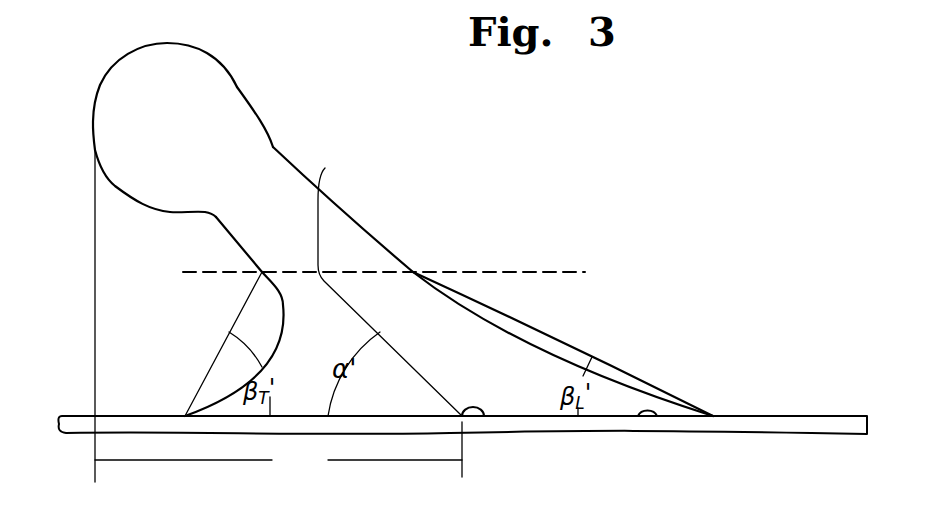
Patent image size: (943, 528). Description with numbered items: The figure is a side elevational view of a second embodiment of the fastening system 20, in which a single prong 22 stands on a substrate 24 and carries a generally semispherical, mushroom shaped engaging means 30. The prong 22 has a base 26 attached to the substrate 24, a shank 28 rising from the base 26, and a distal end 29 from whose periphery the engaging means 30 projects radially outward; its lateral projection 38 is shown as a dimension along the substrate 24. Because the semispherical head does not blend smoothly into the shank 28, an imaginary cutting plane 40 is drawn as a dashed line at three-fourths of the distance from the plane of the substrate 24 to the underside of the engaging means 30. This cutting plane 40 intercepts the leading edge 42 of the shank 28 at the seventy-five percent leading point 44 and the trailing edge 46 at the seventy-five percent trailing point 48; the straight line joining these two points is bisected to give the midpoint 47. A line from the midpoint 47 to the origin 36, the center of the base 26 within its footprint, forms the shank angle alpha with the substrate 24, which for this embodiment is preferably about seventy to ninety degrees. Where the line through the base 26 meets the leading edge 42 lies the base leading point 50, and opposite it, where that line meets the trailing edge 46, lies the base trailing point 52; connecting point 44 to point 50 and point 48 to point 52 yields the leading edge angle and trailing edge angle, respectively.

The fastening system 20 is at (442, 129).
The prong 22 is at (496, 223).
The substrate 24 is at (91, 428).
The base 26 is at (653, 416).
The shank 28 is at (262, 252).
The distal end 29 is at (217, 188).
The engaging means 30 is at (210, 78).
The origin 36 is at (483, 416).
The lateral projection 38 is at (278, 316).
The imaginary cutting plane 40 is at (384, 275).
The leading edge 42 is at (353, 221).
The 75% leading point 44 is at (413, 272).
The trailing edge 46 is at (225, 228).
The midpoint 47 is at (390, 285).
The 75% trailing point 48 is at (262, 272).
The base leading point 50 is at (713, 416).
The base trailing point 52 is at (185, 416).